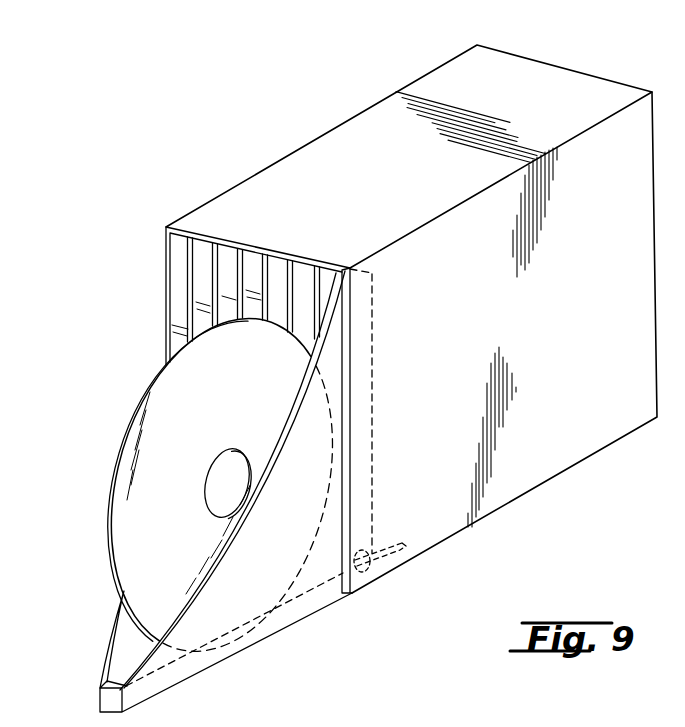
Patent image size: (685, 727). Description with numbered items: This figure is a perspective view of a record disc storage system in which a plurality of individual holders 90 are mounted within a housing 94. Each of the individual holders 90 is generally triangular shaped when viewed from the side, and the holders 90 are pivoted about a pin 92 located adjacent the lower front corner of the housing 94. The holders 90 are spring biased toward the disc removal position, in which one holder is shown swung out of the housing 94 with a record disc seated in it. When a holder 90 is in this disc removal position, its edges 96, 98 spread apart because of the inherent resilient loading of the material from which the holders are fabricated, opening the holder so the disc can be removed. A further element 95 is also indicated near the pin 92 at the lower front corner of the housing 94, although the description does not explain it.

The housing 94 is at (317, 165).
The individual holders 90 is at (202, 278).
The pin 92 is at (365, 578).
The pin 95 is at (405, 563).
The edge 96 is at (110, 637).
The edge 98 is at (187, 653).